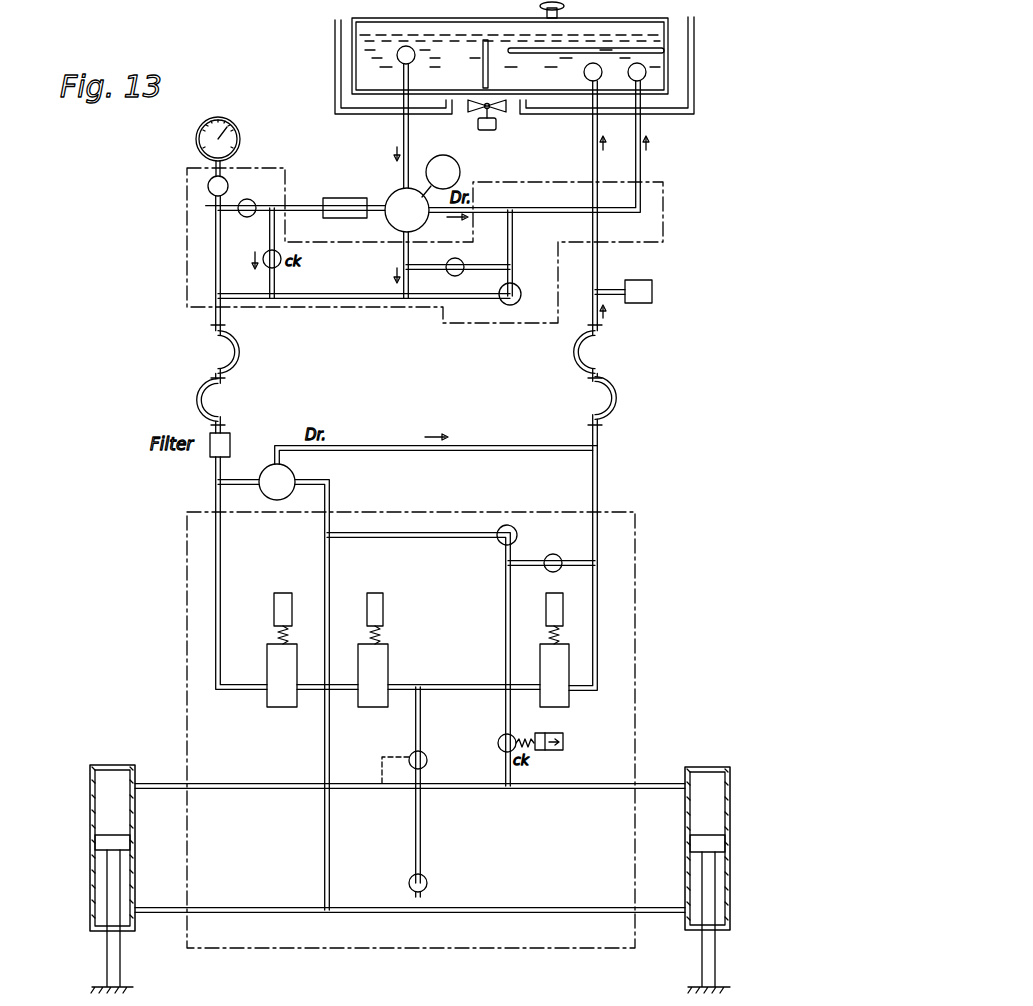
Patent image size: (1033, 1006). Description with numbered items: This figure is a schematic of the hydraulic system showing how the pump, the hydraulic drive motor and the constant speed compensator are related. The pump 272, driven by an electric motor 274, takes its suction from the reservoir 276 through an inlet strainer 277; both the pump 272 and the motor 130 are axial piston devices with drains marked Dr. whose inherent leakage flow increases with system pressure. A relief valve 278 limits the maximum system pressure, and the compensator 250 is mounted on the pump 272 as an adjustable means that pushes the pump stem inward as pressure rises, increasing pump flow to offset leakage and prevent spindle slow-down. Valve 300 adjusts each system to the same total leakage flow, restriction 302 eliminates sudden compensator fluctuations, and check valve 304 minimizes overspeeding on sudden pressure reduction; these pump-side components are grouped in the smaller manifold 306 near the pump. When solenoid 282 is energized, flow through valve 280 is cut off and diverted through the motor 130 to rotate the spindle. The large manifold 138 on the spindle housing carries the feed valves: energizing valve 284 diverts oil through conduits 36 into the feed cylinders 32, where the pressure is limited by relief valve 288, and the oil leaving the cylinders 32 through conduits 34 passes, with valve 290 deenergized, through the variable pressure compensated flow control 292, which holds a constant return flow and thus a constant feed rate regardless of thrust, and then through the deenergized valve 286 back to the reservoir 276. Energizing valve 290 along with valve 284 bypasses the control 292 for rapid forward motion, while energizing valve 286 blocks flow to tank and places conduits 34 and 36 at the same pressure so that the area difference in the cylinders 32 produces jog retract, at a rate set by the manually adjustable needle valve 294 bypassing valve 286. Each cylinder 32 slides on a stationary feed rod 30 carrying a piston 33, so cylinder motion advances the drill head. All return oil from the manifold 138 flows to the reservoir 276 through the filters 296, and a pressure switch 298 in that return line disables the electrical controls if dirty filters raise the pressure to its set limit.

The reservoir 276 is at (350, 20).
The inlet strainer 277 is at (397, 56).
The filters 296 is at (600, 78).
The restriction 302 is at (252, 200).
The compensator 250 is at (343, 200).
The electric motor 274 is at (459, 170).
The pump 272 is at (392, 221).
The check valve 304 is at (282, 262).
The smaller manifold 306 is at (187, 250).
The valve 300 is at (451, 278).
The relief valve 278 is at (513, 308).
The pressure switch 298 is at (653, 291).
The motor 130 is at (277, 502).
The manifold 138 is at (185, 630).
The relief valve 288 is at (515, 520).
The needle valve 294 is at (570, 538).
The solenoid 282 is at (283, 602).
The solenoid valve 280 is at (277, 690).
The solenoid valve 284 is at (383, 667).
The solenoid valve 286 is at (563, 667).
The solenoid valve 290 is at (560, 738).
The variable pressure compensated flow control 292 is at (425, 752).
The hydraulic conduits 34 is at (247, 789).
The hydraulic conduits 36 is at (215, 908).
The feed cylinders 32 is at (92, 803).
The piston 33 is at (105, 843).
The feed rods 30 is at (112, 950).